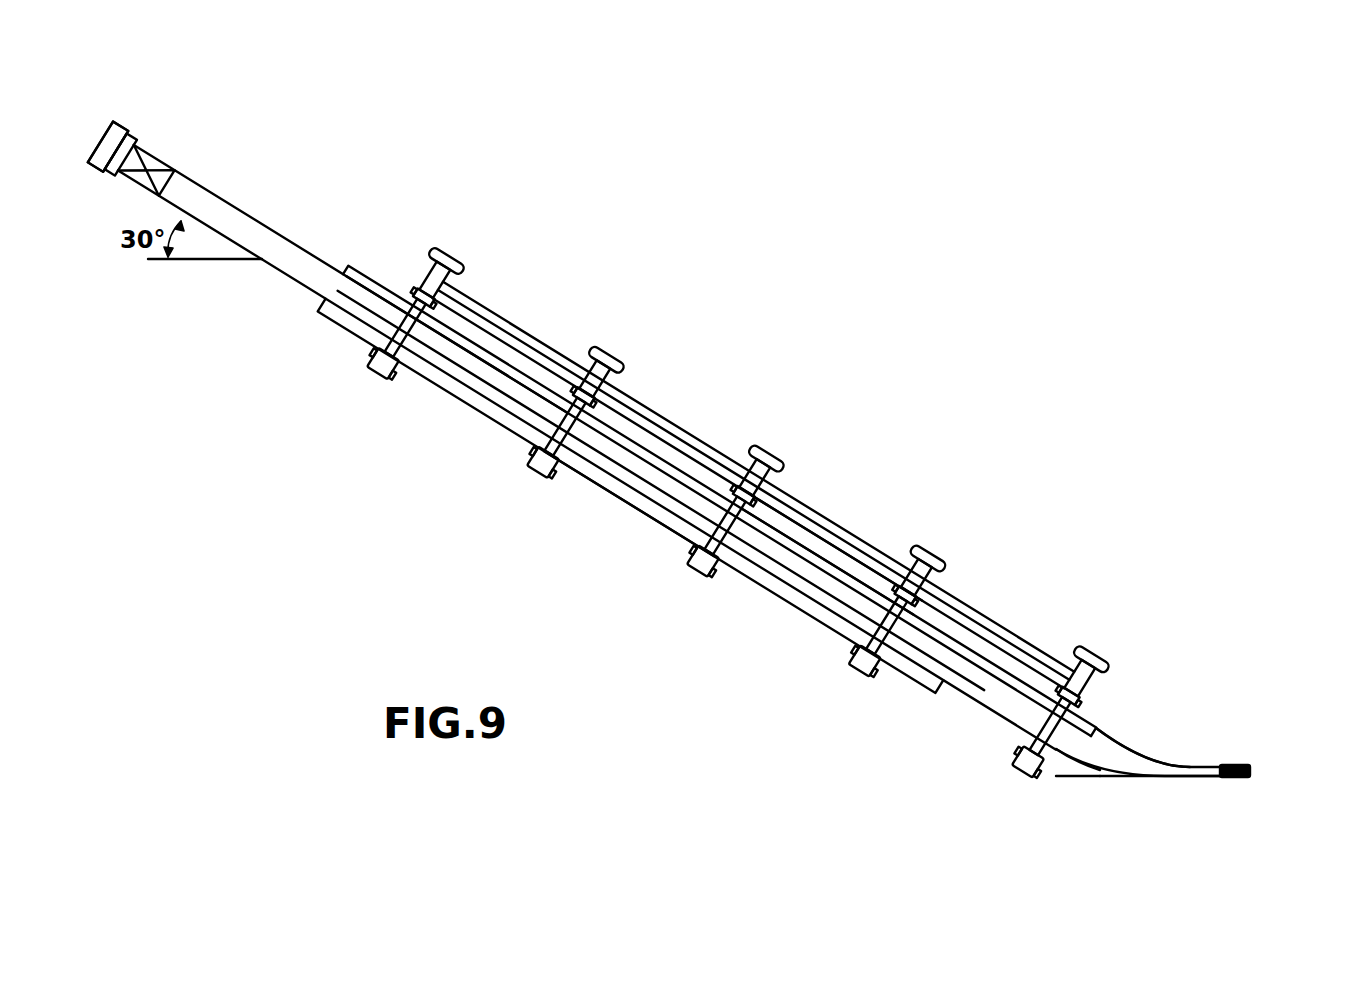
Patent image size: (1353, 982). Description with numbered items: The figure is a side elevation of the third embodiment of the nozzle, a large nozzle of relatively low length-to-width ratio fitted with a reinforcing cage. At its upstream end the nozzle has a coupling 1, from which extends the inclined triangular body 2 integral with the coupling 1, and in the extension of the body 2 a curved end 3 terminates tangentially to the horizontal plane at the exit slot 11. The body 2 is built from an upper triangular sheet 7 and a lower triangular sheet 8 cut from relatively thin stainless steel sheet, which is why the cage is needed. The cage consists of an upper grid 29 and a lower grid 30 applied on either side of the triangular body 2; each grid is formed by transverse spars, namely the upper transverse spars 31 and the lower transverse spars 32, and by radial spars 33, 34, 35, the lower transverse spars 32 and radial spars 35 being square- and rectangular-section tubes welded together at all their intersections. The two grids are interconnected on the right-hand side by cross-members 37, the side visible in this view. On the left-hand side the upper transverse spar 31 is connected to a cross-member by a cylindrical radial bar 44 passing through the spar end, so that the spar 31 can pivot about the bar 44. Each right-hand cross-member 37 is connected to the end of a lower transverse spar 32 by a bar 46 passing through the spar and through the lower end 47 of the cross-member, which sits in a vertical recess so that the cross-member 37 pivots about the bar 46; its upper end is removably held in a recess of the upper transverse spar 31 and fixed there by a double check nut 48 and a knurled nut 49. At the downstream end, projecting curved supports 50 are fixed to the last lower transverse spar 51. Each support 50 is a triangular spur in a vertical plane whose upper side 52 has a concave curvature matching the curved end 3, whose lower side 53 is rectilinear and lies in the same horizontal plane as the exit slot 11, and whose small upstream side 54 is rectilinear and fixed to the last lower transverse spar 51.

The coupling 1 is at (153, 152).
The inclined triangular body 2 is at (482, 372).
The curved end 3 is at (1193, 763).
The upper triangular sheet 7 is at (303, 243).
The lower triangular sheet 8 is at (283, 273).
The exit slot 11 is at (1252, 772).
The upper grid 29 is at (380, 258).
The lower grid 30 is at (340, 328).
The upper transverse spar 31 is at (793, 470).
The lower transverse spar 32 is at (712, 578).
The radial spar 33 is at (880, 597).
The radial spar 34 is at (838, 553).
The radial spar 35 is at (842, 610).
The cross-member 37 is at (700, 507).
The cylindrical radial bar 44 is at (525, 327).
The bar 46 is at (724, 572).
The lower end of cross-member 47 is at (698, 563).
The double check nut 48 is at (735, 495).
The knurled nut 49 is at (765, 448).
The projecting curved support 50 is at (1090, 748).
The last lower transverse spar 51 is at (1030, 752).
The upper side 52 is at (1132, 755).
The lower side 53 is at (1130, 773).
The upstream side 54 is at (1062, 745).